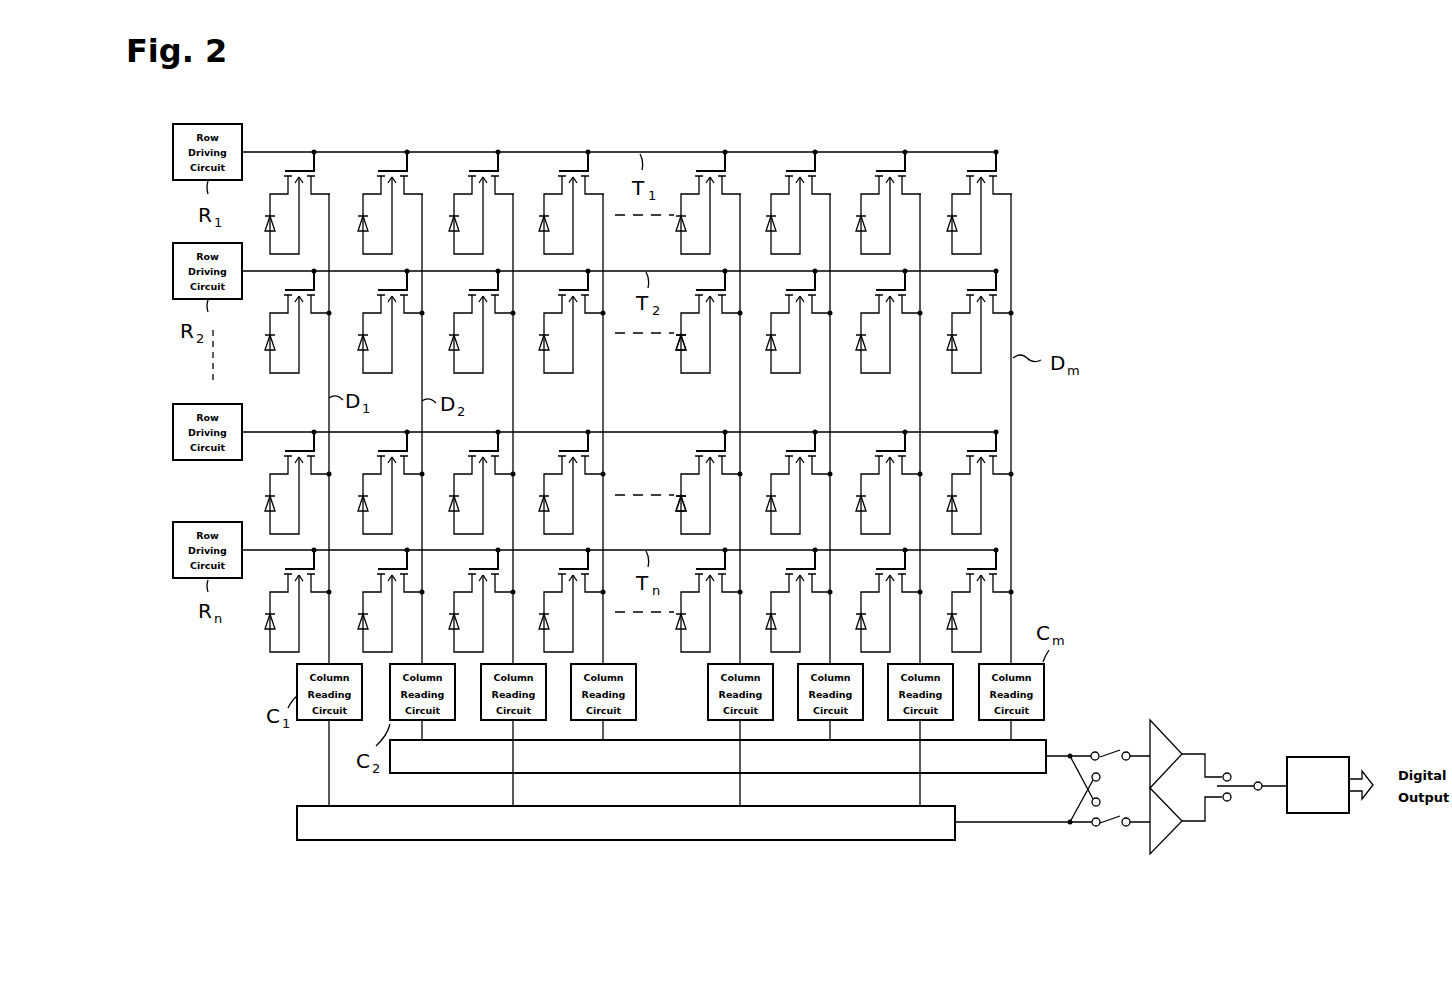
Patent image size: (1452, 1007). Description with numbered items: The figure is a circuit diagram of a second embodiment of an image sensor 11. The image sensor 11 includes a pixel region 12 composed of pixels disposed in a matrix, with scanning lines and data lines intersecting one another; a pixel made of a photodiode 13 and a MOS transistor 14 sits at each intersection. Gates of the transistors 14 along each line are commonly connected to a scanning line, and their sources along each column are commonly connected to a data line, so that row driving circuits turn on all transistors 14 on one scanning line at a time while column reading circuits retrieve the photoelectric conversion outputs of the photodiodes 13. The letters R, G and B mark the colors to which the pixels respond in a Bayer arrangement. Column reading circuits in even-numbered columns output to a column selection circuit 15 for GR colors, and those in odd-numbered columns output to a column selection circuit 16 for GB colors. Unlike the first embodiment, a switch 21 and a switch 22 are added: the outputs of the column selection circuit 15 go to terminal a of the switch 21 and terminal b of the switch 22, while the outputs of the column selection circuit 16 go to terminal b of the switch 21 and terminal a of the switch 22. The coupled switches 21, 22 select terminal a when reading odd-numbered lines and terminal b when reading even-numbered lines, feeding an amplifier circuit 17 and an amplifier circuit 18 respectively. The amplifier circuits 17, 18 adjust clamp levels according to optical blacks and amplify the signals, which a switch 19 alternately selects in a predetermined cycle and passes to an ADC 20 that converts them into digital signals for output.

The image sensor 11 is at (1065, 243).
The pixel region 12 is at (985, 402).
The photodiode 13 is at (680, 348).
The MOS transistor 14 is at (730, 291).
The column selection circuit for GR colors 15 is at (688, 740).
The column selection circuit for GB colors 16 is at (307, 806).
The amplifier circuit 17 is at (1156, 726).
The amplifier circuit 18 is at (1155, 852).
The switch 19 is at (1244, 771).
The ADC 20 is at (1319, 757).
The switch 21 is at (1106, 744).
The switch 22 is at (1110, 836).